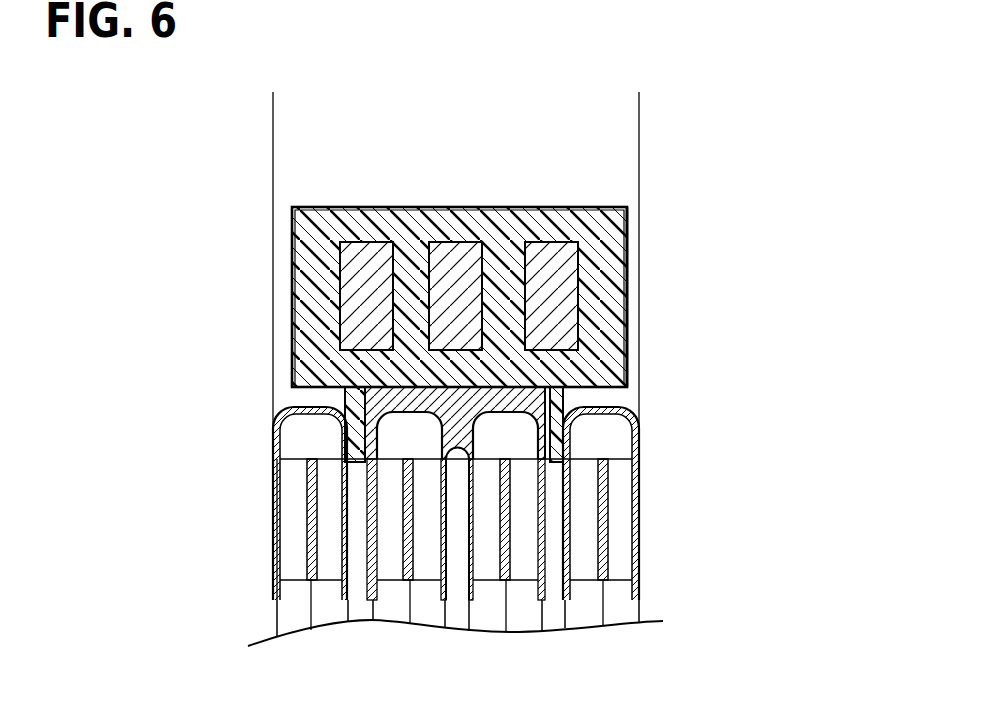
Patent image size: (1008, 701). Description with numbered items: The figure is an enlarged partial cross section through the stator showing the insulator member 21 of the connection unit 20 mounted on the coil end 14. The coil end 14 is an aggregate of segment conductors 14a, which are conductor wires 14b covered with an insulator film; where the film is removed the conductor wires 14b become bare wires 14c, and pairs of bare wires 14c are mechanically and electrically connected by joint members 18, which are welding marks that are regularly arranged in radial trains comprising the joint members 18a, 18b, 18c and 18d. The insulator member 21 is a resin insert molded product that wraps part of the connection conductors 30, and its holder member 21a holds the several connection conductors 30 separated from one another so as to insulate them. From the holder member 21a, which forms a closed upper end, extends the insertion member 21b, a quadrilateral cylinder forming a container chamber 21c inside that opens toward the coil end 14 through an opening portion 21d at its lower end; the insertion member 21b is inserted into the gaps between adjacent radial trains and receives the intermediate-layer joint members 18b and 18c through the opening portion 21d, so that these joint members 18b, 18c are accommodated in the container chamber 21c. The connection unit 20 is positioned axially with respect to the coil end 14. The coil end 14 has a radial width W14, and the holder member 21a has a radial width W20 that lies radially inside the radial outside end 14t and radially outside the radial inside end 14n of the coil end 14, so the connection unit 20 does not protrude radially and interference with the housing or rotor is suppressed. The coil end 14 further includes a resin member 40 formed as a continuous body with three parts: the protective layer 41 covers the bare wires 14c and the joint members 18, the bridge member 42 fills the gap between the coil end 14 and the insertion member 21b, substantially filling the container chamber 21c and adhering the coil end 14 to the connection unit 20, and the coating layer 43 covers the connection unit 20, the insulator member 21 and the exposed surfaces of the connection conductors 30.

The coil end 14 is at (737, 507).
The segment conductor 14a is at (618, 592).
The conductor wire 14b is at (292, 617).
The bare wire 14c is at (288, 552).
The radial inside end 14n is at (262, 249).
The radial outside end 14t is at (621, 249).
The joint member 18 is at (670, 438).
The joint member 18a is at (608, 448).
The joint member 18b is at (512, 447).
The joint member 18c is at (402, 447).
The joint member 18d is at (308, 448).
The connection unit 20 is at (730, 280).
The insulator member 21 is at (684, 227).
The holder member 21a is at (628, 325).
The insertion member 21b is at (560, 405).
The container chamber 21c is at (546, 378).
The opening portion 21d is at (463, 450).
The connection conductor 30 is at (335, 297).
The resin member 40 is at (245, 383).
The protective layer 41 is at (277, 434).
The bridge member 42 is at (276, 417).
The coating layer 43 is at (296, 231).
The width of coil end W14 is at (638, 119).
The width of holder member W20 is at (627, 207).